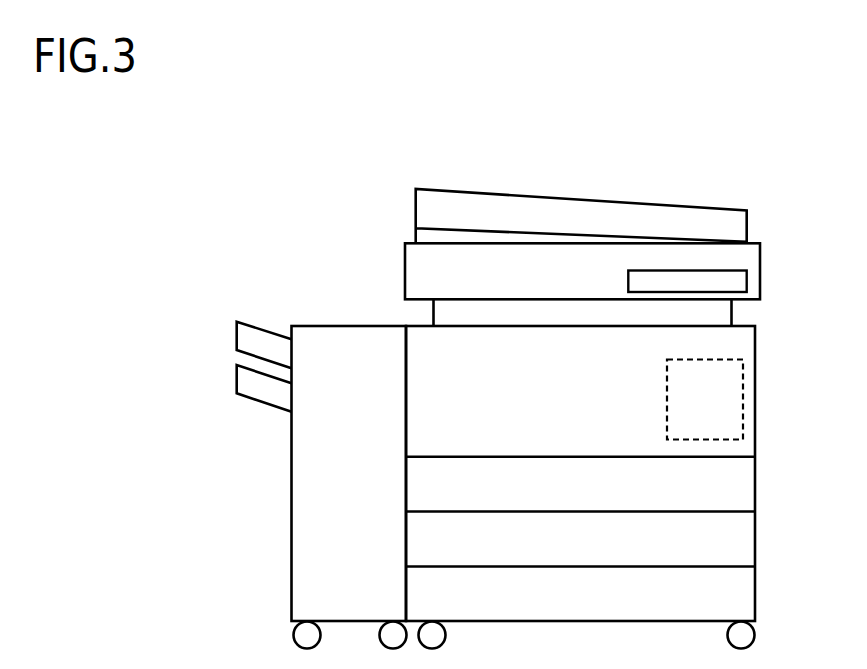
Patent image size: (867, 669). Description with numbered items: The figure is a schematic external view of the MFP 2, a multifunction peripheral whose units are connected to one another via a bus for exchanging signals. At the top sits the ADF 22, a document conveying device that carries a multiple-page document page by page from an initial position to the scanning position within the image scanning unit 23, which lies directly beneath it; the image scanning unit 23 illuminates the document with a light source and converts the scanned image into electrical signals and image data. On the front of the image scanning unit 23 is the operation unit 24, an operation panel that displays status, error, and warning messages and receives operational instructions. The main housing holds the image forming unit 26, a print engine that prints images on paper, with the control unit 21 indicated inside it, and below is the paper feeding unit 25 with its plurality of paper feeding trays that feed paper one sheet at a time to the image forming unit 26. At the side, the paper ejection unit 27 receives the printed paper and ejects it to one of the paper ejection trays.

The MFP 2 is at (218, 120).
The control unit 21 is at (745, 400).
The ADF 22 is at (410, 243).
The image scanning unit 23 is at (405, 285).
The operation unit 24 is at (747, 283).
The paper feeding unit 25 is at (564, 552).
The image forming unit 26 is at (564, 406).
The paper ejection unit 27 is at (292, 548).